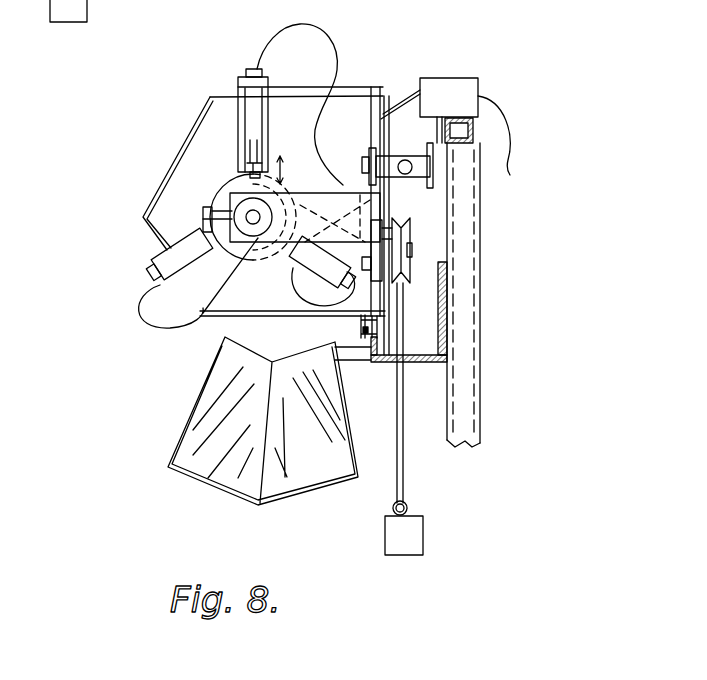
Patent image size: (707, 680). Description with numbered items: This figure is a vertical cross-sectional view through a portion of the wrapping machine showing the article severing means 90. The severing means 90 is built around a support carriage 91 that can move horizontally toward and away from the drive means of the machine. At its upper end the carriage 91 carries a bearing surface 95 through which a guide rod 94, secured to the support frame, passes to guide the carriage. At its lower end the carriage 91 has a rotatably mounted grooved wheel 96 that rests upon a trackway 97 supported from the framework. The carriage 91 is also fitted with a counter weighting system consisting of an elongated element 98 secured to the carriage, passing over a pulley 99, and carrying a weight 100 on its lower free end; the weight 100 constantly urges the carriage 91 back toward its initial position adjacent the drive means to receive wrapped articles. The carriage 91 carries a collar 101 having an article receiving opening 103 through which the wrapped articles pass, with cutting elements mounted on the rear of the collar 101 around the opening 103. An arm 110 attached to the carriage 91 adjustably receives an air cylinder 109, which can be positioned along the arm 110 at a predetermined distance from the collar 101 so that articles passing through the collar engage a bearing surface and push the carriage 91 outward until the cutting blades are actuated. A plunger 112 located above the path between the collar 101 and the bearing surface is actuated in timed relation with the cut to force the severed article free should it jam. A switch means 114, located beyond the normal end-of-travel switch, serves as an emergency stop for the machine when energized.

The article severing means 90 is at (83, 257).
The support carriage 91 is at (386, 205).
The guide rod 94 is at (412, 167).
The bearing surface 95 is at (396, 132).
The grooved wheel 96 is at (257, 225).
The trackway 97 is at (372, 352).
The elongated element 98 is at (403, 462).
The pulley 99 is at (411, 235).
The weight 100 is at (423, 527).
The collar 101 is at (172, 208).
The article receiving opening 103 is at (208, 203).
The air cylinder 109 is at (250, 232).
The arm 110 is at (322, 185).
The plunger 112 is at (255, 127).
The switch means 114 is at (468, 88).